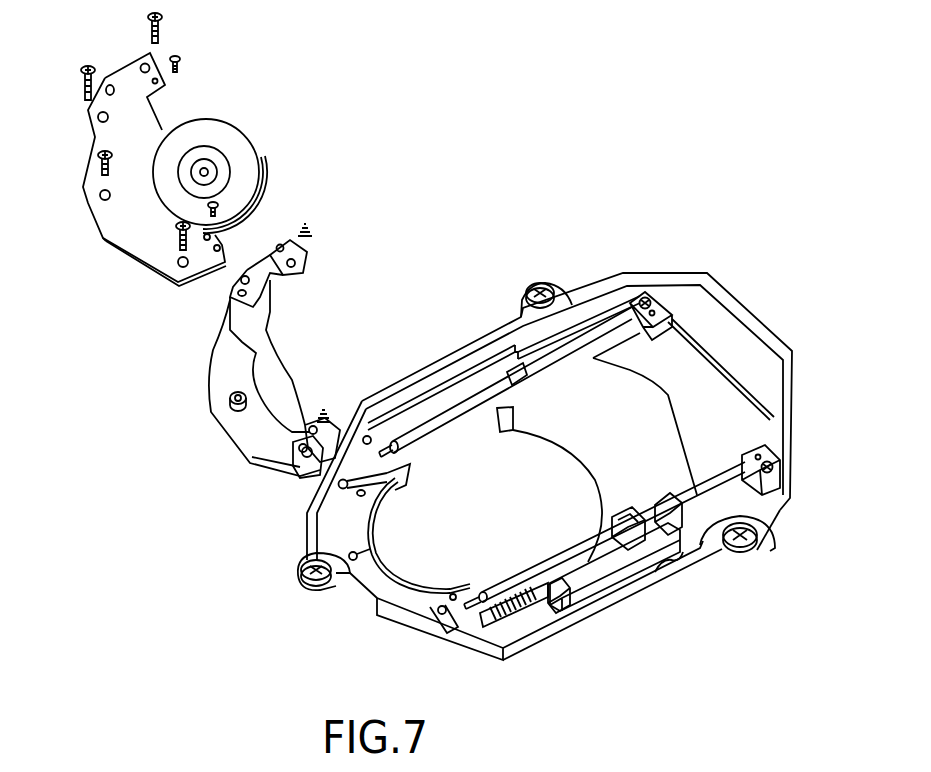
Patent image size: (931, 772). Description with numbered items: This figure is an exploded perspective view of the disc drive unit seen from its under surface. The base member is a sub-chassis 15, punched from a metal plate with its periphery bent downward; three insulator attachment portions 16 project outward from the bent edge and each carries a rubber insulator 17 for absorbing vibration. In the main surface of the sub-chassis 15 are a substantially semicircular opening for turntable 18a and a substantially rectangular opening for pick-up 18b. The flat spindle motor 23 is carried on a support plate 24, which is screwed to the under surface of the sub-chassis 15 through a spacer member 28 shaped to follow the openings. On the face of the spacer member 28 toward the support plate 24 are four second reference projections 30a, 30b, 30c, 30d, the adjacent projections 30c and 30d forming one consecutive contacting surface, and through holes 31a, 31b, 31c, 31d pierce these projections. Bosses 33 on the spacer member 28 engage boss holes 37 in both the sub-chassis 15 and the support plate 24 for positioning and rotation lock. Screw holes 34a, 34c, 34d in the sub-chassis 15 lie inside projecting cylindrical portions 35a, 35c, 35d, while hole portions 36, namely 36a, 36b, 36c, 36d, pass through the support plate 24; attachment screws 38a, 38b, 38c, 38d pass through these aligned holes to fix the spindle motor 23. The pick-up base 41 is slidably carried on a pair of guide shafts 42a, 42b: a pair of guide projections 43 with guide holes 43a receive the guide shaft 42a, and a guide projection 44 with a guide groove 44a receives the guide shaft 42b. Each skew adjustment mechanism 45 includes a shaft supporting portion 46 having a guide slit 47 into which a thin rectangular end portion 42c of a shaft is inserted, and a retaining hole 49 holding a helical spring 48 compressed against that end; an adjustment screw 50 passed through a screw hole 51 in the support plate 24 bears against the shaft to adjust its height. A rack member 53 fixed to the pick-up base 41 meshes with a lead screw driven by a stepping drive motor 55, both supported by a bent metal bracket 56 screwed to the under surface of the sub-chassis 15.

The sub-chassis 15 is at (729, 282).
The insulator attachment portions 16 is at (520, 315).
The insulator 17 is at (541, 283).
The opening for turntable 18a is at (377, 609).
The opening for pick-up 18b is at (738, 328).
The spindle motor 23 is at (263, 180).
The support plate 24 is at (238, 143).
The spacer member 28 is at (212, 447).
The second reference projection 30a is at (310, 462).
The second reference projection 30b is at (228, 399).
The second reference projection 30c is at (231, 293).
The second reference projection 30d is at (282, 238).
The through hole 31a is at (296, 470).
The through hole 31b is at (235, 384).
The through hole 31c is at (234, 306).
The through hole 31d is at (300, 249).
The boss 33 is at (241, 281).
The screw hole 34a is at (430, 633).
The screw hole 34c is at (395, 488).
The screw hole 34d is at (378, 440).
The cylindrical portion 35a is at (456, 628).
The cylindrical portion 35c is at (410, 467).
The cylindrical portion 35d is at (391, 445).
The hole portion 36 is at (154, 169).
The hole portion 36a is at (181, 267).
The hole portion 36b is at (104, 203).
The hole portion 36c is at (108, 121).
The hole portion 36d is at (143, 63).
The boss hole 37 is at (110, 85).
The attachment screw 38a is at (177, 232).
The attachment screw 38b is at (110, 166).
The attachment screw 38c is at (87, 65).
The attachment screw 38d is at (166, 25).
The pick-up base 41 is at (672, 418).
The guide shaft 42a is at (557, 562).
The guide shaft 42b is at (471, 422).
The end portion 42c is at (397, 445).
The guide projection 43 is at (641, 587).
The guide hole 43a is at (650, 500).
The guide projection 44 is at (514, 375).
The guide groove 44a is at (508, 372).
The skew adjustment mechanism 45 is at (666, 300).
The shaft supporting portion 46 is at (313, 266).
The guide slit 47 is at (290, 287).
The helical spring 48 is at (310, 226).
The retaining hole 49 is at (296, 268).
The adjustment screw 50 is at (181, 62).
The screw hole 51 is at (158, 83).
The rack member 53 is at (670, 570).
The drive motor 55 is at (533, 618).
The bracket 56 is at (608, 598).